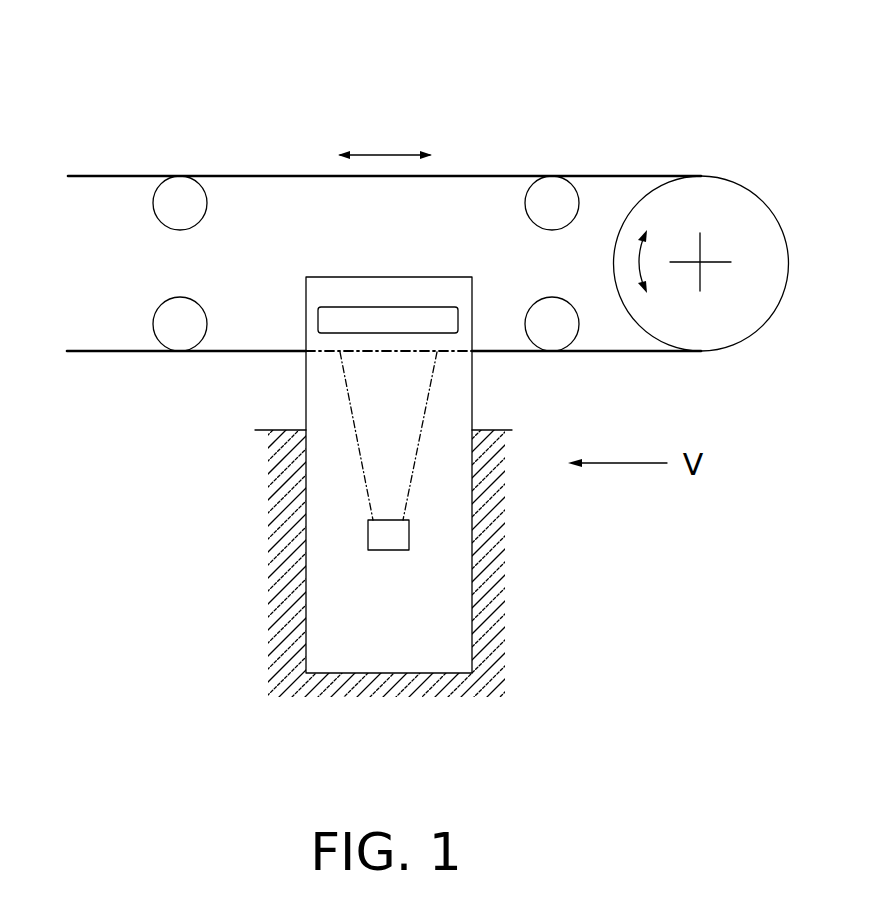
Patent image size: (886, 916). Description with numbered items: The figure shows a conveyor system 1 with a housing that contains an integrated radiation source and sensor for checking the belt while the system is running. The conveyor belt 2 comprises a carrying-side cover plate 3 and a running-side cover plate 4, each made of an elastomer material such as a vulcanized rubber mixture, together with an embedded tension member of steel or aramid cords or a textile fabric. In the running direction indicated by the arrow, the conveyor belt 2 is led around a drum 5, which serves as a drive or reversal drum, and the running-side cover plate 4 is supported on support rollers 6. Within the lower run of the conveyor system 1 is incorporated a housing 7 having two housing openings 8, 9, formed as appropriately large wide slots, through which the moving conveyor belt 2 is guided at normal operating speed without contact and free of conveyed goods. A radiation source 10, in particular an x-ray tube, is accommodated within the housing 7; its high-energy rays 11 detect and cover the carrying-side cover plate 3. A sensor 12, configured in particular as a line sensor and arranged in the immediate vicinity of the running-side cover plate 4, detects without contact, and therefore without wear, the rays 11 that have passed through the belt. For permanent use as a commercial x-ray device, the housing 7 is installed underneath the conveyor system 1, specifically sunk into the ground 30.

The conveyor system 1 is at (514, 93).
The conveyor belt 2 is at (375, 207).
The carrying-side cover plate 3 is at (100, 173).
The running-side cover plate 4 is at (84, 178).
The drum 5 is at (728, 203).
The support rollers 6 is at (188, 207).
The housing 7 is at (442, 655).
The housing opening 8 is at (470, 358).
The housing opening 9 is at (306, 360).
The radiation source 10 is at (392, 537).
The high-energy rays 11 is at (363, 475).
The sensor 12 is at (425, 300).
The ground 30 is at (482, 596).